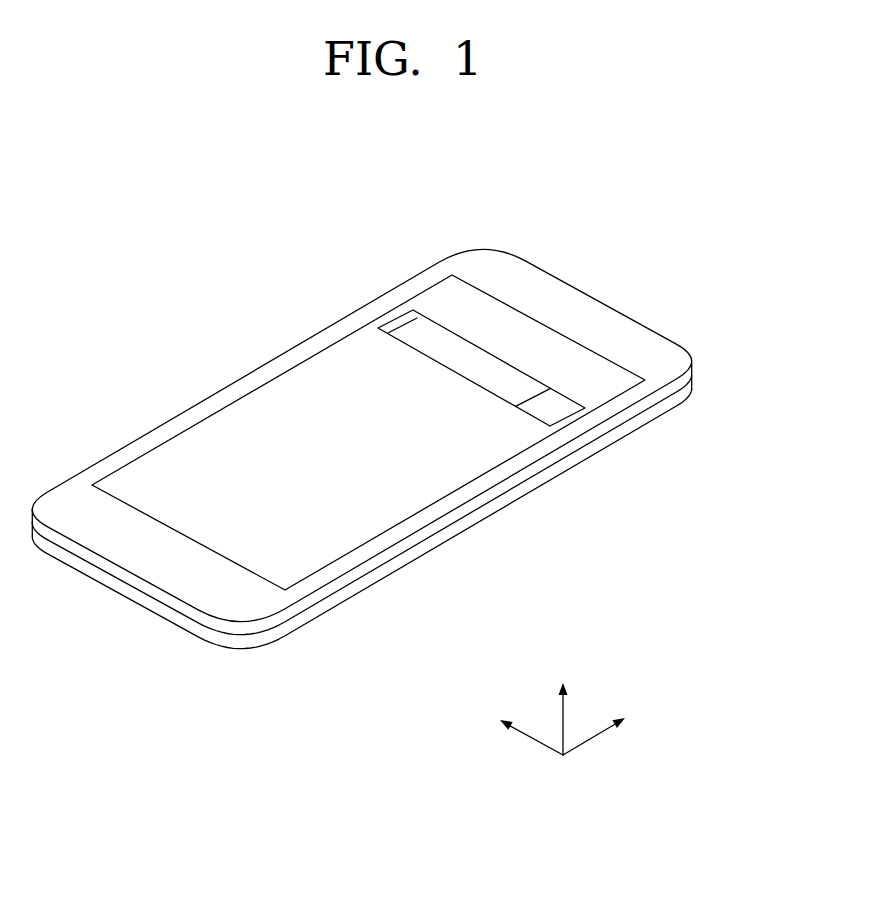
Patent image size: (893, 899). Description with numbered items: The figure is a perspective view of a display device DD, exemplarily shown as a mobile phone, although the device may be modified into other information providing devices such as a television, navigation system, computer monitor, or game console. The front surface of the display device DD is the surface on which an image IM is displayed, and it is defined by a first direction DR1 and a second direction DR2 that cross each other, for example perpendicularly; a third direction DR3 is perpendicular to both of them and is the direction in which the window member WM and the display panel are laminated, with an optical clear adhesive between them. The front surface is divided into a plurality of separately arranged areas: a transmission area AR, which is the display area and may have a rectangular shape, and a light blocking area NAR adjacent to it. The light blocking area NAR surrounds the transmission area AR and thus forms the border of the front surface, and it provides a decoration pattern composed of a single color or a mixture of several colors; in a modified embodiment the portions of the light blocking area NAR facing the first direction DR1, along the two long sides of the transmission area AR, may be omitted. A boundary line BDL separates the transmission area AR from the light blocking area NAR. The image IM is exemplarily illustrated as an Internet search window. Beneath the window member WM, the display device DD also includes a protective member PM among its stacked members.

The display device DD is at (718, 274).
The window member WM is at (699, 363).
The protective member PM is at (700, 388).
The transmission area AR is at (361, 348).
The light blocking area NAR is at (541, 287).
The boundary line BDL is at (582, 345).
The image IM is at (393, 316).
The first direction DR1 is at (511, 724).
The second direction DR2 is at (613, 724).
The third direction DR3 is at (561, 705).